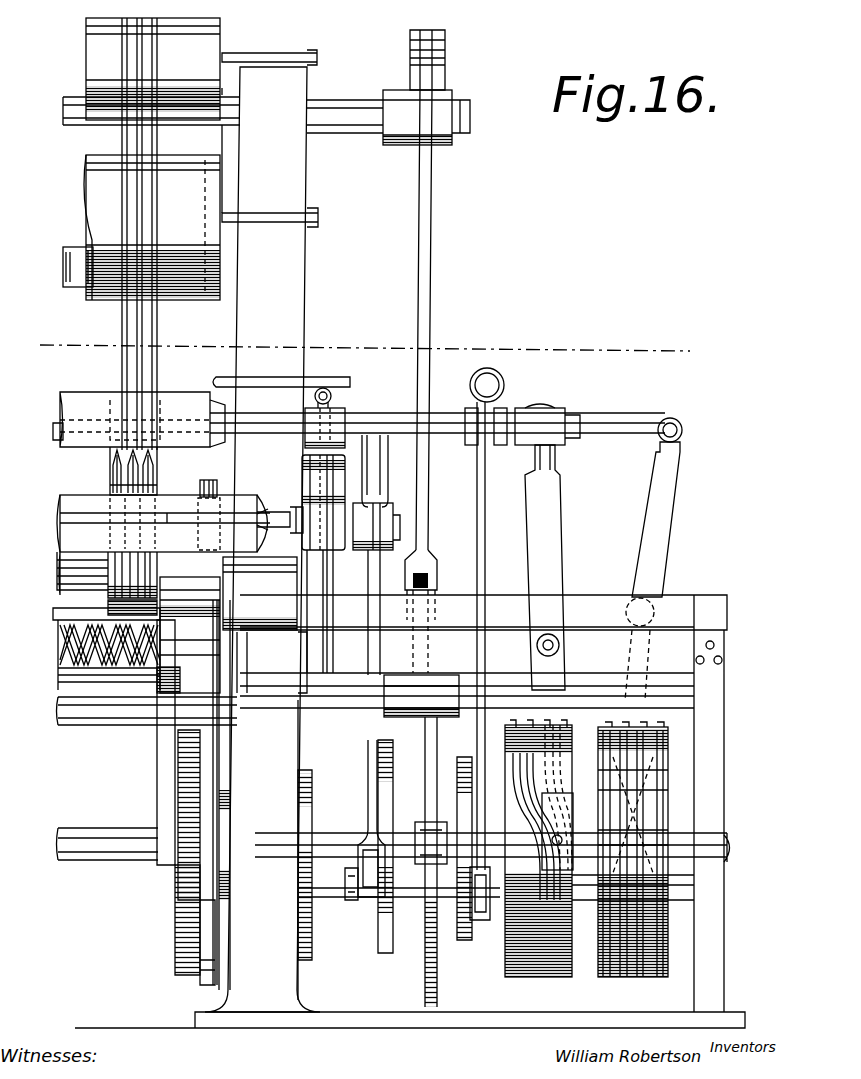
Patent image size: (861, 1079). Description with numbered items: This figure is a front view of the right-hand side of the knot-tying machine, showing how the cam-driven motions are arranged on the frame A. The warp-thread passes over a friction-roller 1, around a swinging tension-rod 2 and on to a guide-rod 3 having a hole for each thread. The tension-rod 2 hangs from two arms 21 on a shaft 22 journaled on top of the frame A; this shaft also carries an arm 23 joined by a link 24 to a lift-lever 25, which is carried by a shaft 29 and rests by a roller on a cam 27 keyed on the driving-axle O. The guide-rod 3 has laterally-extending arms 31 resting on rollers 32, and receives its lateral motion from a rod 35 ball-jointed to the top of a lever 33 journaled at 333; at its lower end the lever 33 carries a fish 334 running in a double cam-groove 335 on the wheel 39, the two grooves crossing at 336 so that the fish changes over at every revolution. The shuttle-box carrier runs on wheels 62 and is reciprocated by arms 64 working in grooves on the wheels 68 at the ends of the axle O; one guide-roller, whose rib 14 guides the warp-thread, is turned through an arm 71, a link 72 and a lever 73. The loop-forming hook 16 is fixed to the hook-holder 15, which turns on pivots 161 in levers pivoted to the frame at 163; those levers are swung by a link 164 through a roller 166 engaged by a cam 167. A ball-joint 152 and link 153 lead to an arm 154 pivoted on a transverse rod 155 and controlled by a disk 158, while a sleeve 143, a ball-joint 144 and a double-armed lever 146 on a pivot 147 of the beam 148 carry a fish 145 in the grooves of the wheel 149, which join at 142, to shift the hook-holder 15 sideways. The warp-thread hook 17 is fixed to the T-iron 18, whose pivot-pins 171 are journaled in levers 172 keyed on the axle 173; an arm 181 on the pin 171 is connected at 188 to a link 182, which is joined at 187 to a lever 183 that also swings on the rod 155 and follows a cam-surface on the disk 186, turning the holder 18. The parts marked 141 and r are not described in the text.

The friction-roller 1 is at (95, 204).
The tension-rod 2 is at (62, 270).
The guide-rod 3 is at (52, 430).
The rib 14 is at (110, 552).
The hook-holder 15 is at (78, 395).
The loop-forming hook 16 is at (110, 462).
The warp-thread hook 17 is at (155, 465).
The T-iron 18 is at (60, 512).
The arms 21 is at (218, 150).
The shaft 22 is at (343, 105).
The arm 23 is at (446, 72).
The link 24 is at (430, 278).
The lift-lever 25 is at (425, 675).
The cam 27 is at (423, 994).
The shaft 29 is at (500, 686).
The laterally-extending arms 31 is at (342, 388).
The rollers 32 is at (332, 398).
The lever 33 is at (670, 518).
The rod 35 is at (626, 437).
The wheel 39 is at (668, 920).
The wheels 62 is at (227, 625).
The arms 64 is at (157, 755).
The wheels 68 is at (175, 935).
The arm 71 is at (210, 478).
The link 72 is at (215, 797).
The lever 73 is at (205, 957).
The belt 141 is at (528, 775).
The junction 142 is at (572, 925).
The sleeve 143 is at (570, 405).
The ball-joint 144 is at (538, 408).
The fish 145 is at (563, 838).
The double-armed lever 146 is at (555, 550).
The pivot 147 is at (560, 648).
The beam 148 is at (688, 650).
The wheel 149 is at (535, 975).
The ball-joint 152 is at (495, 378).
The link 153 is at (476, 532).
The arm 154 is at (470, 925).
The transverse rod 155 is at (410, 895).
The disk 158 is at (457, 940).
The pivots 161 is at (378, 415).
The pivots 163 is at (352, 480).
The link 164 is at (347, 607).
The roller 166 is at (296, 758).
The cam 167 is at (312, 800).
The pivot-pins 171 is at (280, 520).
The levers 172 is at (302, 652).
The axle 173 is at (62, 718).
The arm 181 is at (388, 485).
The link 182 is at (372, 645).
The lever 183 is at (370, 900).
The disk 186 is at (403, 783).
The connection 187 is at (352, 880).
The connection 188 is at (382, 458).
The journal 333 is at (622, 649).
The fish 334 is at (585, 818).
The cam-groove 335 is at (670, 985).
The crossing point 336 is at (675, 782).
The frame A is at (302, 298).
The driving-axle O is at (80, 822).
The belt r is at (150, 343).